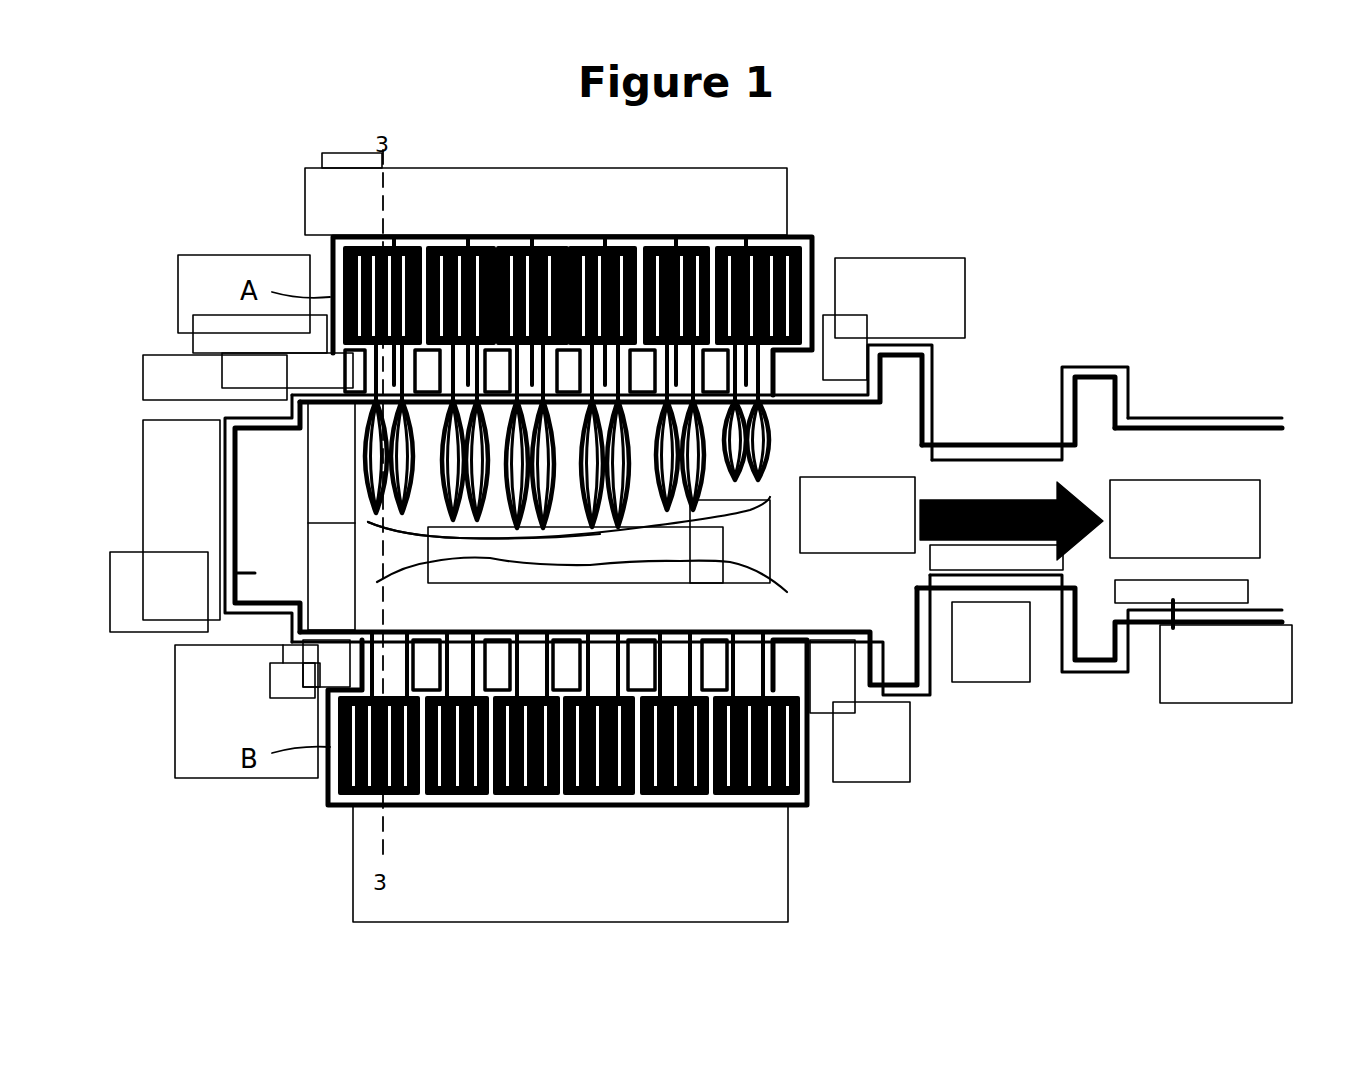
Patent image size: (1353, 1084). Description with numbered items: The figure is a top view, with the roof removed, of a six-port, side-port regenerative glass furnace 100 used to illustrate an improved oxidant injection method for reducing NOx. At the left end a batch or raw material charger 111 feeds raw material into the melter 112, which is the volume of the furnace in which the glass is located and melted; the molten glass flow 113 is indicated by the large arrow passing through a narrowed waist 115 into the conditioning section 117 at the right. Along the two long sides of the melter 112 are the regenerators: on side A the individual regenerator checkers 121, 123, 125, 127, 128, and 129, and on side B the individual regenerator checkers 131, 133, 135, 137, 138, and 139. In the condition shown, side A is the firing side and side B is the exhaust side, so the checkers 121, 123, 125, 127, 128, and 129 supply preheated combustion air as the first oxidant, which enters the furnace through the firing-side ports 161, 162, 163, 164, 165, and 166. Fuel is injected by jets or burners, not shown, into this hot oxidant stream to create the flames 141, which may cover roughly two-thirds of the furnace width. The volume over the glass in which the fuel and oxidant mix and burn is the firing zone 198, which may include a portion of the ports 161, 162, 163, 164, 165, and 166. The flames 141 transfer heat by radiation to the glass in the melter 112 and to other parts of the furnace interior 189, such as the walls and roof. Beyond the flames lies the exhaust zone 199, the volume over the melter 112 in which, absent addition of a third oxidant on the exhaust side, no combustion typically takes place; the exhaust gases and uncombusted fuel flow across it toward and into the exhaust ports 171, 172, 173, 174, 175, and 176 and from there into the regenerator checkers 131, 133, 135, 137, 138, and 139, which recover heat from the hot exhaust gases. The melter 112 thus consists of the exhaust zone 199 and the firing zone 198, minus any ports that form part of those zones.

The side-port furnace 100 is at (975, 190).
The batch or raw material charger 111 is at (247, 503).
The melter 112 is at (348, 410).
The molten glass flow 113 is at (1013, 497).
The waist 115 is at (983, 457).
The conditioning section 117 is at (1177, 428).
The regenerator checker 121 is at (374, 248).
The regenerator checker 123 is at (447, 248).
The regenerator checker 125 is at (518, 248).
The regenerator checker 127 is at (588, 248).
The regenerator checker 128 is at (663, 248).
The regenerator checker 129 is at (740, 248).
The regenerator checker 131 is at (353, 805).
The regenerator checker 133 is at (440, 795).
The regenerator checker 135 is at (518, 793).
The regenerator checker 137 is at (593, 795).
The regenerator checker 138 is at (667, 793).
The regenerator checker 139 is at (743, 795).
The flames 141 is at (375, 418).
The port 161 is at (405, 403).
The port 162 is at (480, 403).
The port 163 is at (546, 403).
The port 164 is at (621, 403).
The port 165 is at (696, 403).
The port 166 is at (761, 403).
The exhaust port 171 is at (390, 650).
The exhaust port 172 is at (457, 647).
The exhaust port 173 is at (530, 650).
The exhaust port 174 is at (602, 652).
The exhaust port 175 is at (675, 645).
The exhaust port 176 is at (745, 647).
The furnace interior 189 is at (772, 638).
The firing zone 198 is at (572, 548).
The exhaust zone 199 is at (580, 563).